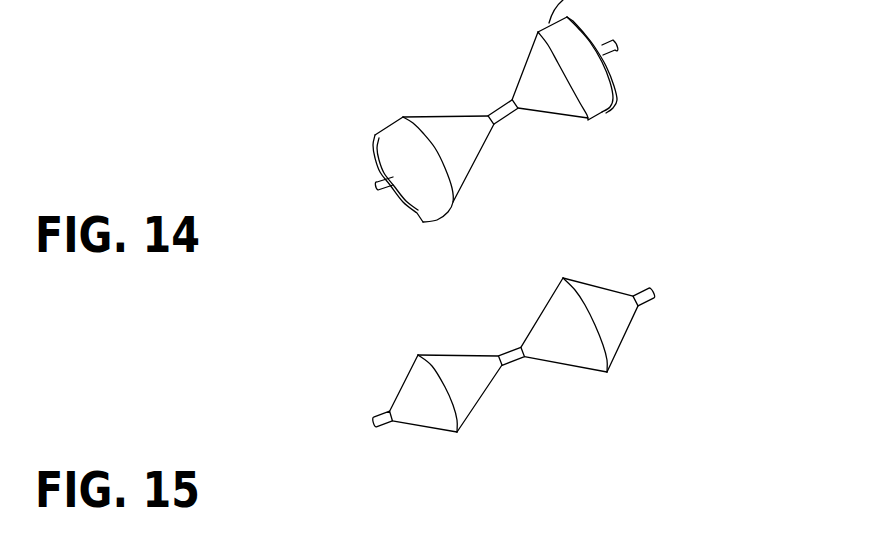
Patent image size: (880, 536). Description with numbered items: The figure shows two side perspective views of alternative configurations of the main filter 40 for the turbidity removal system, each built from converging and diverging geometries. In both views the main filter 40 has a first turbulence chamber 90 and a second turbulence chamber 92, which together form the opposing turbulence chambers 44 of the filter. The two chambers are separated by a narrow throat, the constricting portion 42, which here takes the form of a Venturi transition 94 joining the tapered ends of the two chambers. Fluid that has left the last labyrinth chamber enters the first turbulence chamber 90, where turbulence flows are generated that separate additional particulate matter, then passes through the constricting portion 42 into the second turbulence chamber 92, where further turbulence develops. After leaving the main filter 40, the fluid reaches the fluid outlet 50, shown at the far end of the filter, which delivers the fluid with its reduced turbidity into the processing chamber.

In FIG. 14, the main filter 40 is at (405, 78).
In FIG. 15, the main filter 40 is at (425, 313).
In FIG. 14, the constricting portion 42 is at (506, 122).
In FIG. 15, the constricting portion 42 is at (512, 363).
In FIG. 15, the opposing turbulence chambers 44 is at (582, 303).
In FIG. 14, the fluid outlet 50 is at (616, 46).
In FIG. 15, the fluid outlet 50 is at (655, 293).
In FIG. 14, the first turbulence chamber 90 is at (420, 117).
In FIG. 15, the first turbulence chamber 90 is at (437, 352).
In FIG. 14, the second turbulence chamber 92 is at (601, 107).
In FIG. 15, the second turbulence chamber 92 is at (618, 340).
In FIG. 14, the Venturi transition 94 is at (498, 101).
In FIG. 15, the Venturi transition 94 is at (503, 348).